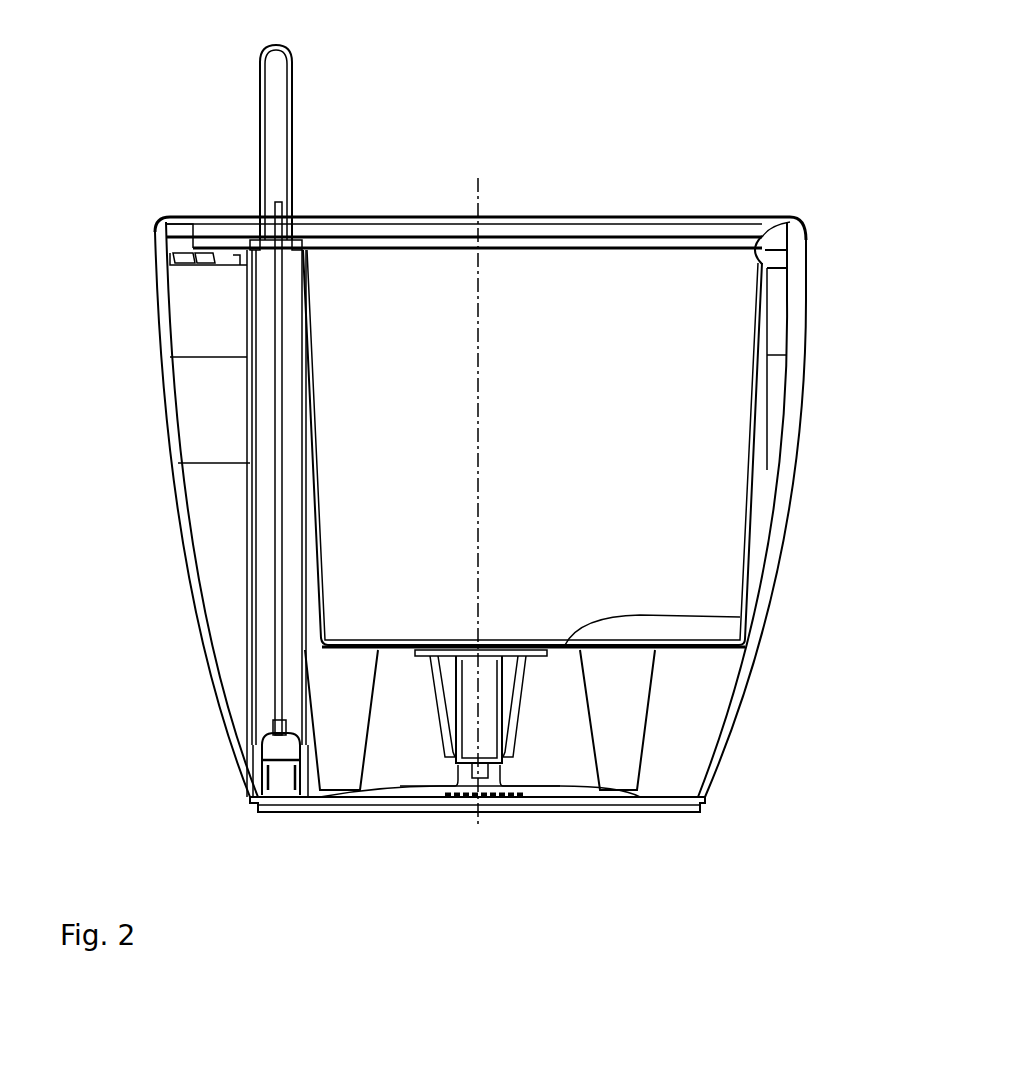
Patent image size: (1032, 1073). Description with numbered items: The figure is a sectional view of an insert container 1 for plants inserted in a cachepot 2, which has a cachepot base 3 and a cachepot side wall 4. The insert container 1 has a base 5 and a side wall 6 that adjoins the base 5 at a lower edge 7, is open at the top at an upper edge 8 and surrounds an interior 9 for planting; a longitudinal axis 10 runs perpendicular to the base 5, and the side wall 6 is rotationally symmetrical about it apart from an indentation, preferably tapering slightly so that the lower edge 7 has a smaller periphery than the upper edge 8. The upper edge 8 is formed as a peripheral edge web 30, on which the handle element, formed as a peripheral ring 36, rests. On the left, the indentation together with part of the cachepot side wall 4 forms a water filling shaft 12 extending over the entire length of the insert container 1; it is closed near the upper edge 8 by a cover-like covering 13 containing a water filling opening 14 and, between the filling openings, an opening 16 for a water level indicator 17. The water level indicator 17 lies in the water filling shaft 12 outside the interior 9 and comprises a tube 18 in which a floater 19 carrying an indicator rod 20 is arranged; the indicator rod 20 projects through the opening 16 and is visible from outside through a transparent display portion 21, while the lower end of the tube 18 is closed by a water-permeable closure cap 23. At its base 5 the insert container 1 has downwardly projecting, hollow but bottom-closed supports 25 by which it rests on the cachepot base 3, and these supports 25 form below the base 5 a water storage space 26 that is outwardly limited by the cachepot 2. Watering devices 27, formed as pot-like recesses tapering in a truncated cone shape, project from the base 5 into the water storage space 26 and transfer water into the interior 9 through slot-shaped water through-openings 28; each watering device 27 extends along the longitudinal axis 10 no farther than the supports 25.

The insert container 1 is at (575, 136).
The cachepot 2 is at (815, 372).
The cachepot base 3 is at (580, 815).
The cachepot side wall 4 is at (778, 535).
The base 5 is at (750, 643).
The side wall 6 is at (763, 455).
The lower edge 7 is at (738, 647).
The upper edge 8 is at (752, 250).
The interior 9 is at (499, 305).
The longitudinal axis 10 is at (476, 228).
The water filling shaft 12 is at (212, 555).
The covering 13 is at (205, 240).
The water filling opening 14 is at (178, 254).
The opening 16 is at (298, 240).
The water level indicator 17 is at (240, 115).
The tube 18 is at (262, 520).
The floater 19 is at (268, 770).
The indicator rod 20 is at (280, 680).
The display portion 21 is at (262, 148).
The closure cap 23 is at (258, 800).
The supports 25 is at (640, 685).
The water storage space 26 is at (410, 768).
The watering device 27 is at (512, 730).
The water through-openings 28 is at (430, 730).
The edge web 30 is at (780, 258).
The ring 36 is at (725, 228).